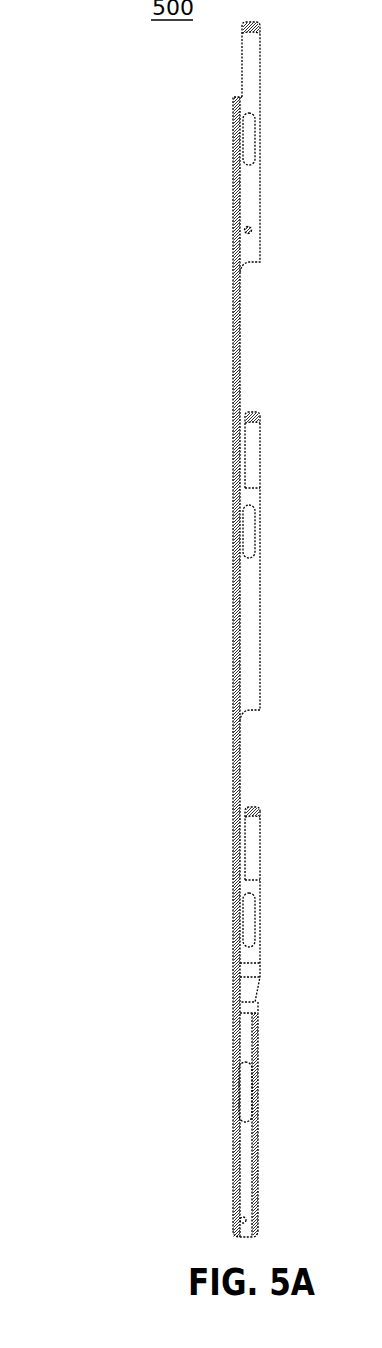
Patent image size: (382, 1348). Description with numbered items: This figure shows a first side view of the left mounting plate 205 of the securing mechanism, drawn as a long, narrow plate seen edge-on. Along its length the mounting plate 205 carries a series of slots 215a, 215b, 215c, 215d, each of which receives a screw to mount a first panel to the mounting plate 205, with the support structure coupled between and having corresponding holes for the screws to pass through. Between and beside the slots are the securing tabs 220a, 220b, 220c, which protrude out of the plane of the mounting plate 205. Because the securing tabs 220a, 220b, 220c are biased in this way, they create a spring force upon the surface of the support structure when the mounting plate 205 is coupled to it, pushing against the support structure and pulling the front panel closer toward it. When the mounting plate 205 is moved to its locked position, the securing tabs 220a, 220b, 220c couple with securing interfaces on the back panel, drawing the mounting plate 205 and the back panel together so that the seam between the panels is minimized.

The left mounting plate 205 is at (165, 208).
The securing tab 220c is at (250, 62).
The slot 215d is at (249, 145).
The securing tab 220b is at (250, 457).
The slot 215c is at (245, 532).
The securing tab 220a is at (250, 850).
The slot 215b is at (245, 925).
The slot 215a is at (245, 1085).